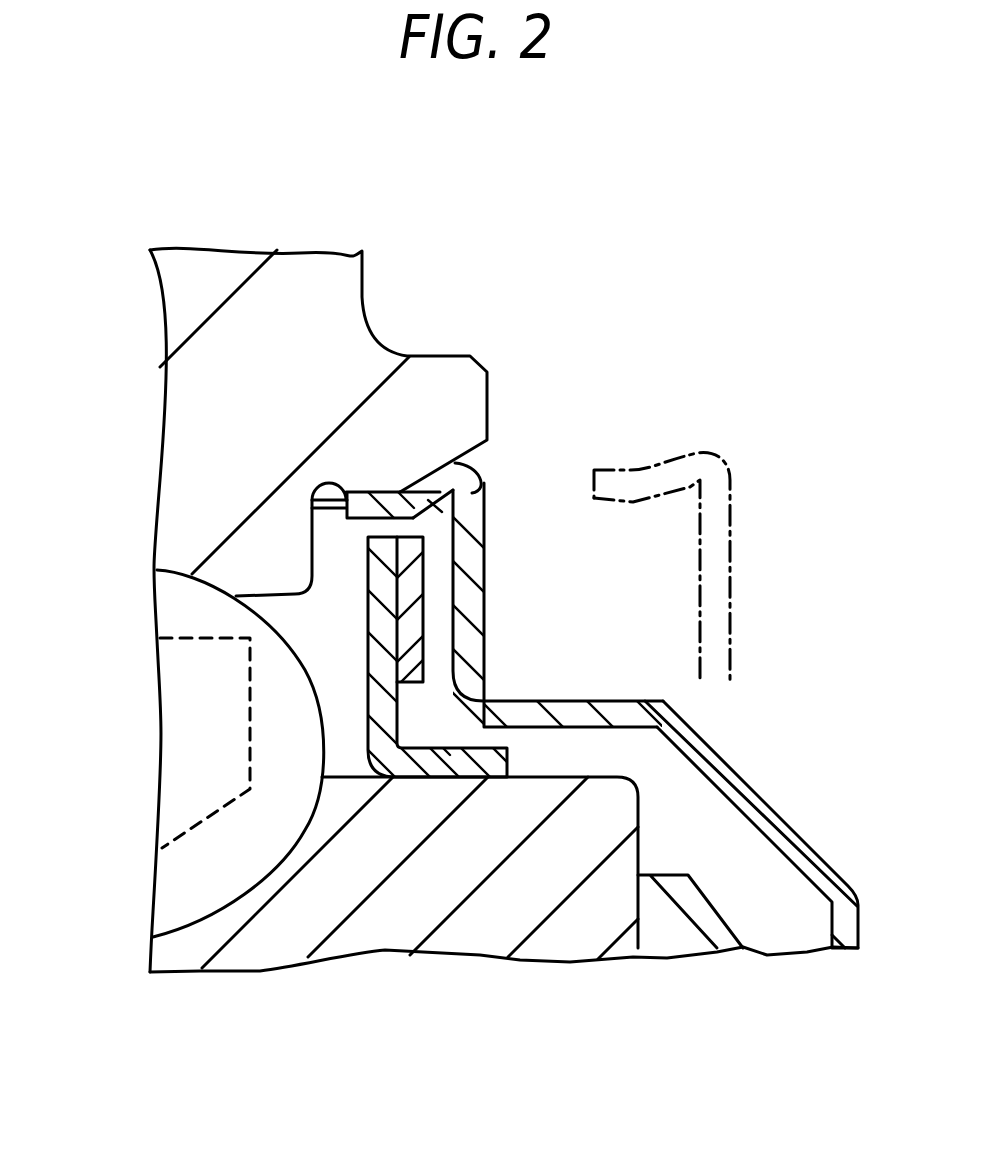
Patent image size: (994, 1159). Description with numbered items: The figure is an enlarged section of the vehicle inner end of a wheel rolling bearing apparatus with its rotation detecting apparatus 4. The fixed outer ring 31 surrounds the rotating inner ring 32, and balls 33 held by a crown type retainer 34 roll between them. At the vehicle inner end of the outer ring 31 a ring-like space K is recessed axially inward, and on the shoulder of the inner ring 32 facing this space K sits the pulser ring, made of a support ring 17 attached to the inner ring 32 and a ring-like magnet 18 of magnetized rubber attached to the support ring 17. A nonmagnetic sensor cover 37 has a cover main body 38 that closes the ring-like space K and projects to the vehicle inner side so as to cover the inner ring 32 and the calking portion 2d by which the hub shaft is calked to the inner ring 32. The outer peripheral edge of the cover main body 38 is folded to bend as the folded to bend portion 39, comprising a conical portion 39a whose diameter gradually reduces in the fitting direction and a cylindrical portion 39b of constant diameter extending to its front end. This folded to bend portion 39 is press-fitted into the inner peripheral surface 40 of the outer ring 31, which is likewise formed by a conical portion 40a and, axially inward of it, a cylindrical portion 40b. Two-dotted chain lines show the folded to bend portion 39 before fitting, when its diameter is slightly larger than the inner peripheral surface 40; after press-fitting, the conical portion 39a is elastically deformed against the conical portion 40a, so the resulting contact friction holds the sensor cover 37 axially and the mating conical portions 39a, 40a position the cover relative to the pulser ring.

The outer ring 31 is at (353, 288).
The inner ring 32 is at (388, 937).
The balls 33 is at (170, 612).
The crown type retainer 34 is at (188, 833).
The rotation detecting apparatus 4 is at (512, 630).
The support ring 17 is at (457, 762).
The ring-like magnet 18 is at (406, 676).
The sensor cover 37 is at (757, 782).
The cover main body 38 is at (808, 838).
The folded to bend portion 39 is at (406, 491).
The conical portion 39a is at (423, 493).
The cylindrical portion 39b is at (613, 500).
The inner peripheral surface 40 is at (487, 455).
The conical portion 40a is at (455, 463).
The cylindrical portion 40b is at (310, 506).
The calking portion 2d is at (707, 917).
The ring-like space K is at (352, 702).